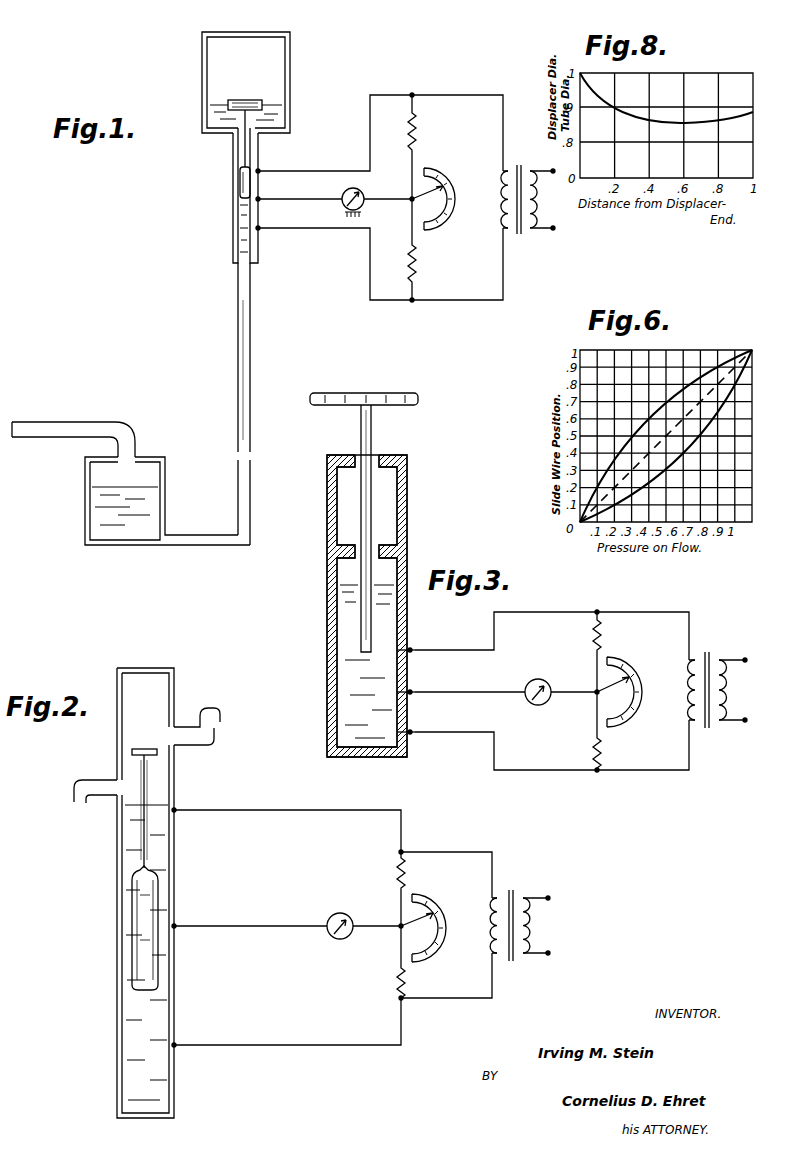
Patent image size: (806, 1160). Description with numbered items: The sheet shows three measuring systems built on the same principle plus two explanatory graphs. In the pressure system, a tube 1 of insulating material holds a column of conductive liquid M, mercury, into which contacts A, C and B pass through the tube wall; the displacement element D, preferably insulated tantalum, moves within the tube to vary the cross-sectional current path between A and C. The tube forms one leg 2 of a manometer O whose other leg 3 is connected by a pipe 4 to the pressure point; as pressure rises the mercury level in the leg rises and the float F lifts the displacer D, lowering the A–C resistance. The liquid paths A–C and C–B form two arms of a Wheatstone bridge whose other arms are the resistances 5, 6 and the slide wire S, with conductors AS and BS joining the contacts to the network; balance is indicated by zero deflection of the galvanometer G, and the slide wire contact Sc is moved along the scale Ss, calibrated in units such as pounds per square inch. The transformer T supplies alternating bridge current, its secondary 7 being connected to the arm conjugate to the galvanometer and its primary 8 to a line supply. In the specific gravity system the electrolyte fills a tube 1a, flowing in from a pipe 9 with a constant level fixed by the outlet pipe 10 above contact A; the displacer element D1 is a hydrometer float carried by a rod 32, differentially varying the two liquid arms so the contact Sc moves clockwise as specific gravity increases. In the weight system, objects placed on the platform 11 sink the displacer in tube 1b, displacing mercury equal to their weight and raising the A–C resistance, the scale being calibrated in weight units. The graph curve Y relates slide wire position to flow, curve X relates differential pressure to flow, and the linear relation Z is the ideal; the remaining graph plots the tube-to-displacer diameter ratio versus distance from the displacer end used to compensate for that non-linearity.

In FIG. 1, the tube 1 is at (233, 200).
In FIG. 2, the tube 1a is at (117, 985).
In FIG. 3, the displacer tube 1b is at (400, 607).
In FIG. 1, the leg of manometer 2 is at (252, 350).
In FIG. 1, the leg of manometer 3 is at (88, 492).
In FIG. 1, the pipe 4 is at (55, 420).
In FIG. 1, the resistance 5 is at (418, 130).
In FIG. 3, the resistance 5 is at (602, 634).
In FIG. 2, the resistance 5 is at (406, 870).
In FIG. 1, the resistance 6 is at (418, 265).
In FIG. 3, the resistance 6 is at (602, 750).
In FIG. 2, the resistance 6 is at (406, 980).
In FIG. 1, the secondary of transformer 7 is at (506, 202).
In FIG. 3, the secondary of transformer 7 is at (690, 690).
In FIG. 2, the secondary of transformer 7 is at (492, 914).
In FIG. 1, the primary of transformer 8 is at (540, 215).
In FIG. 3, the primary of transformer 8 is at (726, 680).
In FIG. 2, the primary of transformer 8 is at (530, 925).
In FIG. 2, the pipe 9 is at (214, 740).
In FIG. 2, the outlet pipe 10 is at (75, 782).
In FIG. 3, the platform 11 is at (322, 408).
In FIG. 2, the displacer rod 32 is at (140, 846).
In FIG. 1, the float F is at (262, 102).
In FIG. 1, the displacement element D is at (240, 172).
In FIG. 3, the displacement element D is at (360, 600).
In FIG. 2, the displacer element D1 is at (130, 920).
In FIG. 1, the column of conductive liquid M is at (240, 246).
In FIG. 3, the column of conductive liquid M is at (350, 665).
In FIG. 1, the contact A is at (259, 168).
In FIG. 3, the contact A is at (412, 653).
In FIG. 2, the contact A is at (176, 813).
In FIG. 1, the contact C is at (259, 196).
In FIG. 3, the contact C is at (412, 695).
In FIG. 2, the contact C is at (176, 929).
In FIG. 1, the contact B is at (259, 225).
In FIG. 3, the contact B is at (412, 735).
In FIG. 2, the contact B is at (176, 1048).
In FIG. 1, the upper bridge conductor AS is at (330, 145).
In FIG. 3, the upper bridge conductor AS is at (548, 612).
In FIG. 2, the upper bridge conductor AS is at (258, 810).
In FIG. 1, the lower bridge conductor BS is at (322, 238).
In FIG. 3, the lower bridge conductor BS is at (563, 770).
In FIG. 2, the lower bridge conductor BS is at (265, 1045).
In FIG. 1, the galvanometer G is at (360, 186).
In FIG. 3, the galvanometer G is at (530, 680).
In FIG. 2, the galvanometer G is at (332, 914).
In FIG. 1, the slide wire S is at (424, 222).
In FIG. 3, the slide wire S is at (604, 684).
In FIG. 2, the slide wire S is at (408, 944).
In FIG. 1, the slide wire contact Sc is at (420, 204).
In FIG. 3, the slide wire contact Sc is at (600, 704).
In FIG. 2, the slide wire contact Sc is at (408, 910).
In FIG. 1, the slide wire scale Ss is at (443, 174).
In FIG. 2, the slide wire scale Ss is at (432, 900).
In FIG. 1, the transformer T is at (522, 238).
In FIG. 3, the transformer T is at (706, 648).
In FIG. 2, the transformer T is at (511, 886).
In FIG. 1, the manometer O is at (206, 404).
In FIG. 6, the curve X is at (662, 412).
In FIG. 6, the curve Y is at (690, 436).
In FIG. 6, the linear relation Z is at (651, 464).